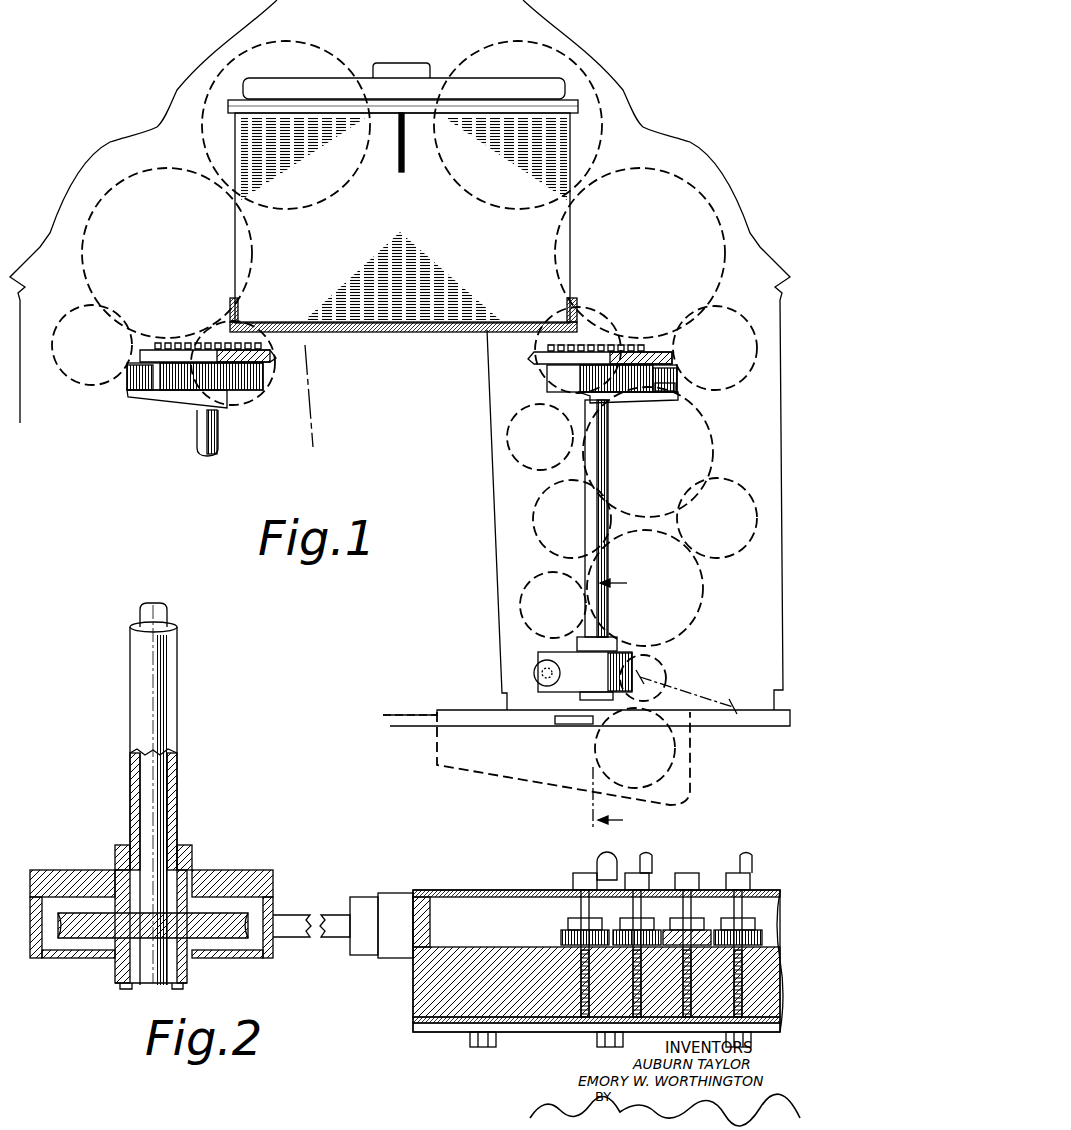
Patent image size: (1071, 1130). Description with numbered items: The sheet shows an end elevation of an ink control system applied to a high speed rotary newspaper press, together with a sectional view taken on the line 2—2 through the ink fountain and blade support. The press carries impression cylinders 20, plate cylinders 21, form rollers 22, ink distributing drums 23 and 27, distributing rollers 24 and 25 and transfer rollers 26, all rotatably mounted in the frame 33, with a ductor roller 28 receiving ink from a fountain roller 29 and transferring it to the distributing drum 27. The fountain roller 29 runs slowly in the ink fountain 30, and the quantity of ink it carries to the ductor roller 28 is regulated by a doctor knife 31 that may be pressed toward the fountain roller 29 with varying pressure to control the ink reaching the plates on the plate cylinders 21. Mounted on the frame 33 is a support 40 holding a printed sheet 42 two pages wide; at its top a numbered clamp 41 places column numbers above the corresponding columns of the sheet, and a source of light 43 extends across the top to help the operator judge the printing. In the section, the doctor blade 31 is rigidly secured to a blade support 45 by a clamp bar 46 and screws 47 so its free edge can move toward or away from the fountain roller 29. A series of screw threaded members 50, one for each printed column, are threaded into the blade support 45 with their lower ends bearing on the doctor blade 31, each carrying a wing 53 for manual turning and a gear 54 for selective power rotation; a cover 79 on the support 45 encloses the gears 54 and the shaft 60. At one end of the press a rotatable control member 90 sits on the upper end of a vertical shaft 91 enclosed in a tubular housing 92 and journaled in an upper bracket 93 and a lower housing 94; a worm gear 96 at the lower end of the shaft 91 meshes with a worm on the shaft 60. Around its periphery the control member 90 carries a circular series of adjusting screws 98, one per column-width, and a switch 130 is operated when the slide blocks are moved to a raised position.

In FIG. 1, the section line 2— 2 is at (665, 702).
In FIG. 1, the impression cylinders 20 is at (298, 40).
In FIG. 1, the plate cylinders 21 is at (95, 195).
In FIG. 1, the form rollers 22 is at (82, 310).
In FIG. 1, the ink distributing drum 23 is at (715, 418).
In FIG. 1, the distributing roller 24 is at (508, 440).
In FIG. 1, the distributing roller 25 is at (522, 595).
In FIG. 1, the transfer rollers 26 is at (540, 497).
In FIG. 1, the ink distributing drum 27 is at (704, 598).
In FIG. 1, the ductor roller 28 is at (668, 672).
In FIG. 1, the fountain roller 29 is at (680, 750).
In FIG. 1, the ink fountain 30 is at (693, 782).
In FIG. 1, the doctor knife 31 is at (585, 724).
In FIG. 2, the doctor knife 31 is at (450, 1025).
In FIG. 1, the frame 33 is at (638, 113).
In FIG. 1, the support 40 is at (403, 331).
In FIG. 1, the clamp 41 is at (398, 120).
In FIG. 1, the printed sheet 42 is at (442, 303).
In FIG. 1, the source of light 43 is at (435, 88).
In FIG. 2, the blade support 45 is at (418, 983).
In FIG. 2, the clamp bar 46 is at (527, 1027).
In FIG. 2, the screws 47 is at (482, 1048).
In FIG. 2, the screw threaded members 50 is at (582, 908).
In FIG. 2, the wing 53 is at (598, 868).
In FIG. 2, the gear 54 is at (560, 937).
In FIG. 1, the shaft 60 is at (534, 673).
In FIG. 2, the shaft 60 is at (298, 912).
In FIG. 2, the cover 79 is at (478, 890).
In FIG. 1, the rotatable control member 90 is at (545, 378).
In FIG. 2, the vertical shaft 91 is at (160, 790).
In FIG. 1, the tubular housing 92 is at (610, 447).
In FIG. 2, the tubular housing 92 is at (178, 808).
In FIG. 1, the upper bracket 93 is at (702, 398).
In FIG. 1, the lower housing 94 is at (577, 667).
In FIG. 2, the lower housing 94 is at (100, 958).
In FIG. 2, the worm gear 96 is at (215, 940).
In FIG. 1, the adjusting screws 98 is at (640, 345).
In FIG. 1, the switch 130 is at (662, 390).